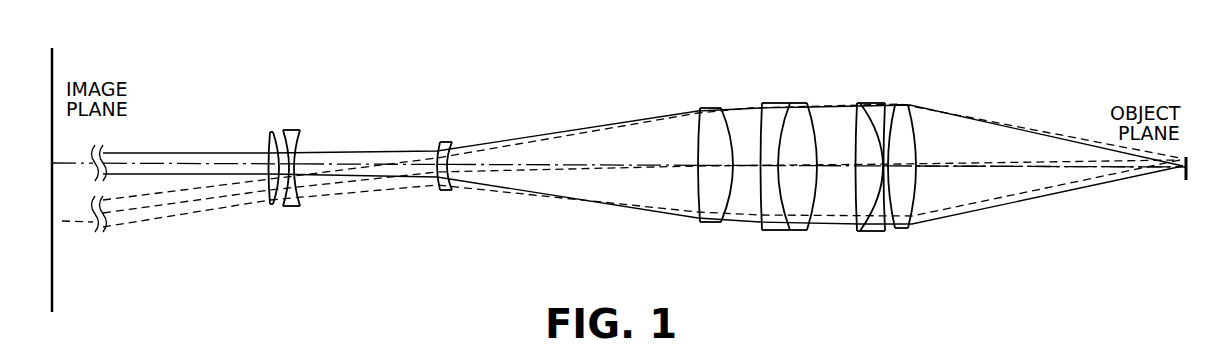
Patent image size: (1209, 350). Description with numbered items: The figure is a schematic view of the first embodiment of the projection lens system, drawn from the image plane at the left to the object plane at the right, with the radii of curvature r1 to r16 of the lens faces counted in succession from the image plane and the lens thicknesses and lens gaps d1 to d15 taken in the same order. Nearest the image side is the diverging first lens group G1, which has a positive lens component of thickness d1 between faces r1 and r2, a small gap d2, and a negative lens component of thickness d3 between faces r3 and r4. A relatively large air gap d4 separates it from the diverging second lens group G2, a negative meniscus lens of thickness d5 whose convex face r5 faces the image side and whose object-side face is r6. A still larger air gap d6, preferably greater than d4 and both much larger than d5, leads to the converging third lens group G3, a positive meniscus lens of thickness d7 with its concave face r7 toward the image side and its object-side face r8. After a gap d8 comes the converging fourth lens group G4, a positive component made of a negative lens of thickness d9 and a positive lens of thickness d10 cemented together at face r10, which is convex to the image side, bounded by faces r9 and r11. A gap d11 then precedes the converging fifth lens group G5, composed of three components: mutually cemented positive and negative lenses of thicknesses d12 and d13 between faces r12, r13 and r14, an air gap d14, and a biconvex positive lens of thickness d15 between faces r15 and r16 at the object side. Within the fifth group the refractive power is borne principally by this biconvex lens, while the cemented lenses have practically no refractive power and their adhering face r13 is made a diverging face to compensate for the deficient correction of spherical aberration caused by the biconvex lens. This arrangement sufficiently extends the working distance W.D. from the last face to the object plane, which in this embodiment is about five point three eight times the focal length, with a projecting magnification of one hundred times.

The first lens group G1 is at (320, 60).
The second lens group G2 is at (478, 60).
The third lens group G3 is at (737, 60).
The fourth lens group G4 is at (812, 60).
The fifth lens group G5 is at (930, 60).
The lens thickness d1 is at (271, 152).
The lens gap d2 is at (278, 152).
The lens thickness d3 is at (300, 150).
The air gap d4 is at (357, 165).
The lens thickness d5 is at (447, 153).
The air gap d6 is at (575, 151).
The lens thickness d7 is at (712, 165).
The lens gap d8 is at (749, 151).
The lens thickness d9 is at (776, 166).
The lens thickness d10 is at (803, 166).
The lens gap d11 is at (838, 151).
The lens thickness d12 is at (868, 166).
The lens thickness d13 is at (883, 166).
The lens gap d14 is at (909, 162).
The lens thickness d15 is at (913, 170).
The radius of curvature r1 is at (270, 186).
The radius of curvature r2 is at (275, 190).
The radius of curvature r3 is at (298, 192).
The radius of curvature r4 is at (300, 192).
The radius of curvature r5 is at (440, 183).
The radius of curvature r6 is at (450, 183).
The radius of curvature r7 is at (700, 212).
The radius of curvature r8 is at (728, 215).
The radius of curvature r9 is at (762, 212).
The radius of curvature r10 is at (781, 208).
The radius of curvature r11 is at (815, 212).
The radius of curvature r12 is at (858, 214).
The radius of curvature r13 is at (881, 218).
The radius of curvature r14 is at (893, 218).
The radius of curvature r15 is at (912, 222).
The radius of curvature r16 is at (918, 218).
The working distance W.D. is at (1051, 152).